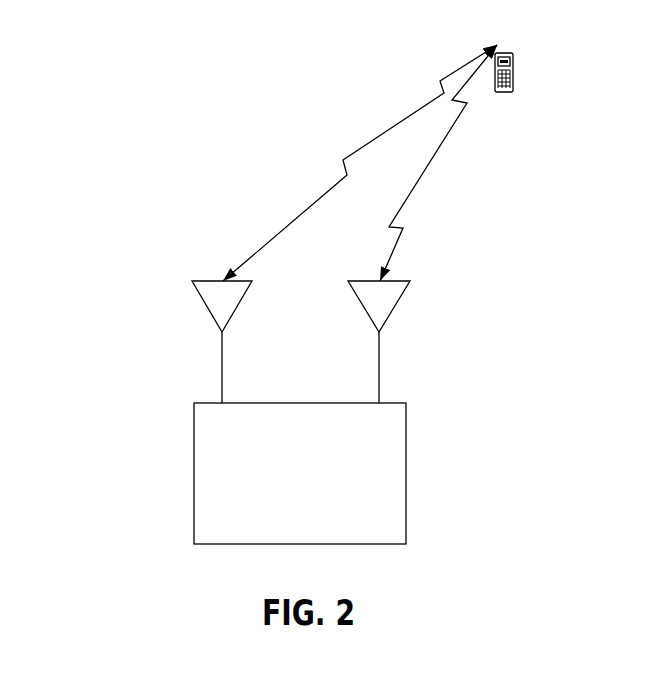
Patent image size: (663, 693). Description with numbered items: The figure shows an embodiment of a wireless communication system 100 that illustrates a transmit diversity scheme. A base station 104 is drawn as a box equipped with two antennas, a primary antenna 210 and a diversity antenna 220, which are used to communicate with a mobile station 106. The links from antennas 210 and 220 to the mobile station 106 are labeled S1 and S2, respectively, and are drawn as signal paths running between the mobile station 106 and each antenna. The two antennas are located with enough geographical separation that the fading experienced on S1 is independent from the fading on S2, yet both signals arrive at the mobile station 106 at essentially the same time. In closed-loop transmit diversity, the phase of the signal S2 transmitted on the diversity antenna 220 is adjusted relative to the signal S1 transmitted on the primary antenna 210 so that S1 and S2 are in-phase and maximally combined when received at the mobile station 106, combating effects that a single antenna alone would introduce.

The system 100 is at (119, 474).
The base station 104 is at (321, 498).
The mobile station 106 is at (511, 53).
The primary antenna 210 is at (238, 302).
The diversity antenna 220 is at (395, 302).
The signal S1 is at (360, 163).
The signal S2 is at (438, 163).